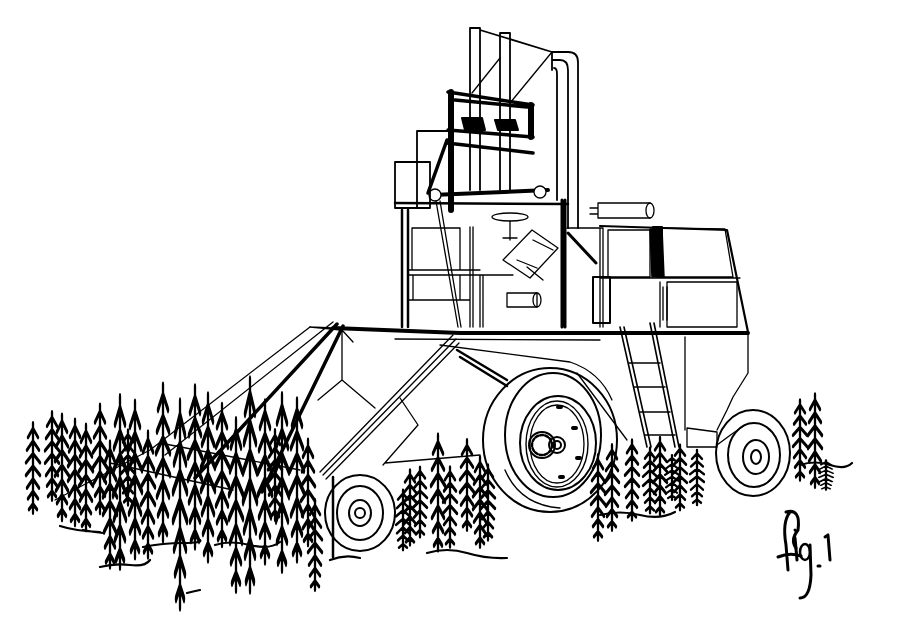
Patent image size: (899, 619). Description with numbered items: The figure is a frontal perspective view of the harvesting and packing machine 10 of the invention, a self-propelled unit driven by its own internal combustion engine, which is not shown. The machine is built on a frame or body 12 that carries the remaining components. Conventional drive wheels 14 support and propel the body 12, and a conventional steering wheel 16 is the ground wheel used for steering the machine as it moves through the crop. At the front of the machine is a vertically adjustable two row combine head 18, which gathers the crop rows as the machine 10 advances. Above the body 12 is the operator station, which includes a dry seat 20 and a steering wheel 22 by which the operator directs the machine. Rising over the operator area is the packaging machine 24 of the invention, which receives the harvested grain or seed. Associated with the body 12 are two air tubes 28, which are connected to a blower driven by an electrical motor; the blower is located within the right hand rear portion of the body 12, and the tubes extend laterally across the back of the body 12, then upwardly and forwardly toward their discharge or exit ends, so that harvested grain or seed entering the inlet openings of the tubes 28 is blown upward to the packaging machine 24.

The harvesting and packing machine 10 is at (349, 293).
The frame or body 12 is at (733, 313).
The drive wheels 14 is at (580, 507).
The steering wheel 16 is at (768, 410).
The two row combine head 18 is at (333, 323).
The dry seat 20 is at (577, 200).
The steering wheel 22 is at (513, 198).
The packaging machine 24 is at (427, 133).
The air tubes 28 is at (575, 127).